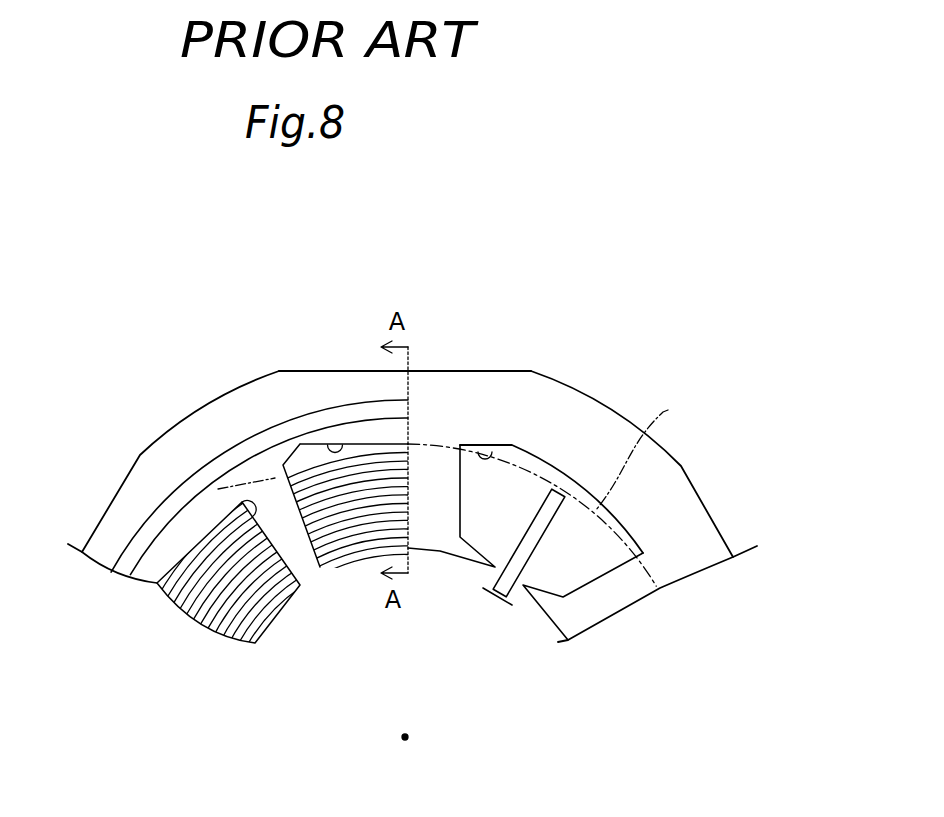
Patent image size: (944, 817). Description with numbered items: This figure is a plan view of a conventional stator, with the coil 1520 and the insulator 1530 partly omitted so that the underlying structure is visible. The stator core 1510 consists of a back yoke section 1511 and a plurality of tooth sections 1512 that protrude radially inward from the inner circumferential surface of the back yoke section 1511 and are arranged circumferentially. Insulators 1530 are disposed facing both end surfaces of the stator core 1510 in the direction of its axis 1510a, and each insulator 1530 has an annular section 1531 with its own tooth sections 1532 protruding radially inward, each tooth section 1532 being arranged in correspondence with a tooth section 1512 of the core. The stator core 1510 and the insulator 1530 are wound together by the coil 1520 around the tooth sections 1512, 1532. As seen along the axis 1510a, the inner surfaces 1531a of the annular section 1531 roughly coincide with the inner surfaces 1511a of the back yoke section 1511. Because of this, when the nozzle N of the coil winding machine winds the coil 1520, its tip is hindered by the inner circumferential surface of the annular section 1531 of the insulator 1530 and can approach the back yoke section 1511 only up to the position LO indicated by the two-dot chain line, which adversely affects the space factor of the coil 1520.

The stator core 1510 is at (529, 382).
The axis 1510a is at (408, 737).
The back yoke section 1511 is at (582, 430).
The inner surfaces of the back yoke section 1511a is at (485, 446).
The tooth section of the stator core 1512 is at (441, 532).
The coil 1520 is at (260, 497).
The insulator 1530 is at (249, 420).
The annular section of the insulator 1531 is at (233, 460).
The inner surfaces of the annular section 1531a is at (327, 445).
The tooth section of the insulator 1532 is at (346, 545).
The nozzle N is at (543, 535).
The position L0 LO is at (649, 449).